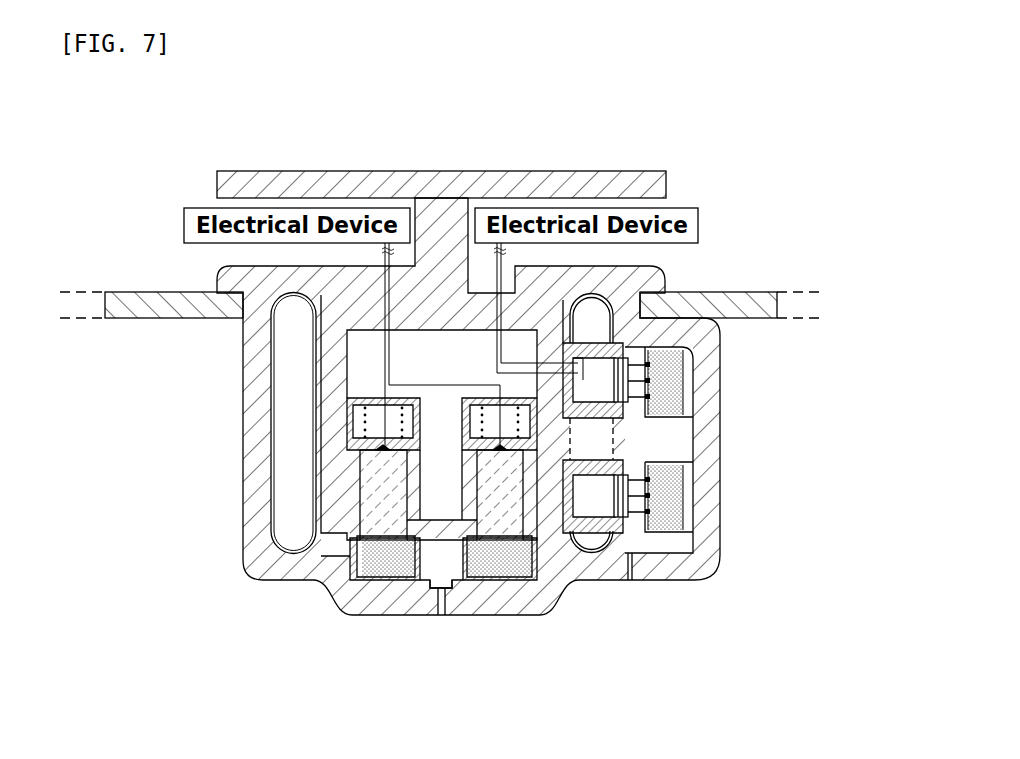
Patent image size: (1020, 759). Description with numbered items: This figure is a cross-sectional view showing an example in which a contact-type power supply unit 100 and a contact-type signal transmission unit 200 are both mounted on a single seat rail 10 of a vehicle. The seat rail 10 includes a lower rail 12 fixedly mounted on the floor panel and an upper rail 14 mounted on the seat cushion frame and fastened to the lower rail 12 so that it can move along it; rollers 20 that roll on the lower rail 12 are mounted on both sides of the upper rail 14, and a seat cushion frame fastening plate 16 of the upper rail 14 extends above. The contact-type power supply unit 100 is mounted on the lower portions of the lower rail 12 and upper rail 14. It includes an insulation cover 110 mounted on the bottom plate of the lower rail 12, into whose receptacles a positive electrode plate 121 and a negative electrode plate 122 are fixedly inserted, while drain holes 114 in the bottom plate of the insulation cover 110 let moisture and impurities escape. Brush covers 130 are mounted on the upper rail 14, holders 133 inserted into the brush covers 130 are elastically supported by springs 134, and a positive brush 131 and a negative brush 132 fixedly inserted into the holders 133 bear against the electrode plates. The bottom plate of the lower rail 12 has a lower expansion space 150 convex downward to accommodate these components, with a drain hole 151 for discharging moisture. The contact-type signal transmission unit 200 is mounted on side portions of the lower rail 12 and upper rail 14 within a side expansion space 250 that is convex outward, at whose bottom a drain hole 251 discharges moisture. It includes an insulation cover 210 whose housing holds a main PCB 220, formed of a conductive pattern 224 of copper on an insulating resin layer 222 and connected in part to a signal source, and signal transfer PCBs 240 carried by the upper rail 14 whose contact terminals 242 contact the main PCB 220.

The seat cushion frame fastening plate 16 is at (320, 183).
The seat rail 10 is at (390, 406).
The lower rail 12 is at (255, 345).
The upper rail 14 is at (330, 378).
The rollers 20 is at (292, 495).
The contact-type power supply unit 100 is at (390, 455).
The insulation cover 110 is at (405, 592).
The drain holes 114 is at (457, 589).
The positive electrode plate 121 is at (378, 575).
The negative electrode plate 122 is at (560, 565).
The brush covers 130 is at (394, 517).
The positive brush 131 is at (380, 567).
The negative brush 132 is at (513, 505).
The holders 133 is at (372, 478).
The springs 134 is at (360, 418).
The lower expansion space 150 is at (512, 568).
The drain hole 151 is at (447, 602).
The contact-type signal transmission unit 200 is at (714, 426).
The insulation cover 210 is at (699, 402).
The main PCB 220 is at (746, 436).
The insulating resin layer 222 is at (672, 352).
The conductive pattern 224 is at (650, 380).
The signal transfer PCBs 240 is at (622, 343).
The contact terminals 242 is at (655, 318).
The side expansion space 250 is at (694, 527).
The drain hole 251 is at (631, 567).